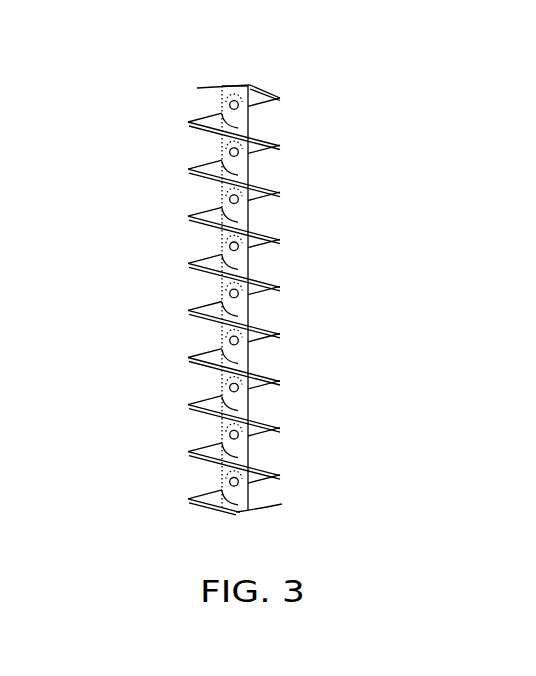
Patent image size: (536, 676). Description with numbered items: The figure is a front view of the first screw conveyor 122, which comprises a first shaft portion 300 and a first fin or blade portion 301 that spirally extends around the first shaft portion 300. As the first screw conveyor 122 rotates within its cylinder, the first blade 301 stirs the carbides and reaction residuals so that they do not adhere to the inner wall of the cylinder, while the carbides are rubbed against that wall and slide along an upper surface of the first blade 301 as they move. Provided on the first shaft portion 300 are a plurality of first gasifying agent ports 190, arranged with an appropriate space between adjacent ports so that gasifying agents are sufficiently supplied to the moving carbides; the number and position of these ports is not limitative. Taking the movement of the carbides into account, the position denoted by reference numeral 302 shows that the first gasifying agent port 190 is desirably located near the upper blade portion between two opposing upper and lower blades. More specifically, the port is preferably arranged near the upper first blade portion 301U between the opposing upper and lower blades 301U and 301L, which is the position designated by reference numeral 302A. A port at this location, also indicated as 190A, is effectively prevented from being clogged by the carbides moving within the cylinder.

The first screw conveyor 122 is at (262, 53).
The first shaft portion 300 is at (222, 239).
The first blade portion 301 is at (197, 127).
The upper first blade portion 301U is at (262, 376).
The lower blade 301L is at (258, 423).
The position near the upper blade portion 302 is at (250, 240).
The preferable position 302A is at (223, 378).
The first gasifying agent port 190 is at (242, 107).
The hole 190A is at (244, 412).